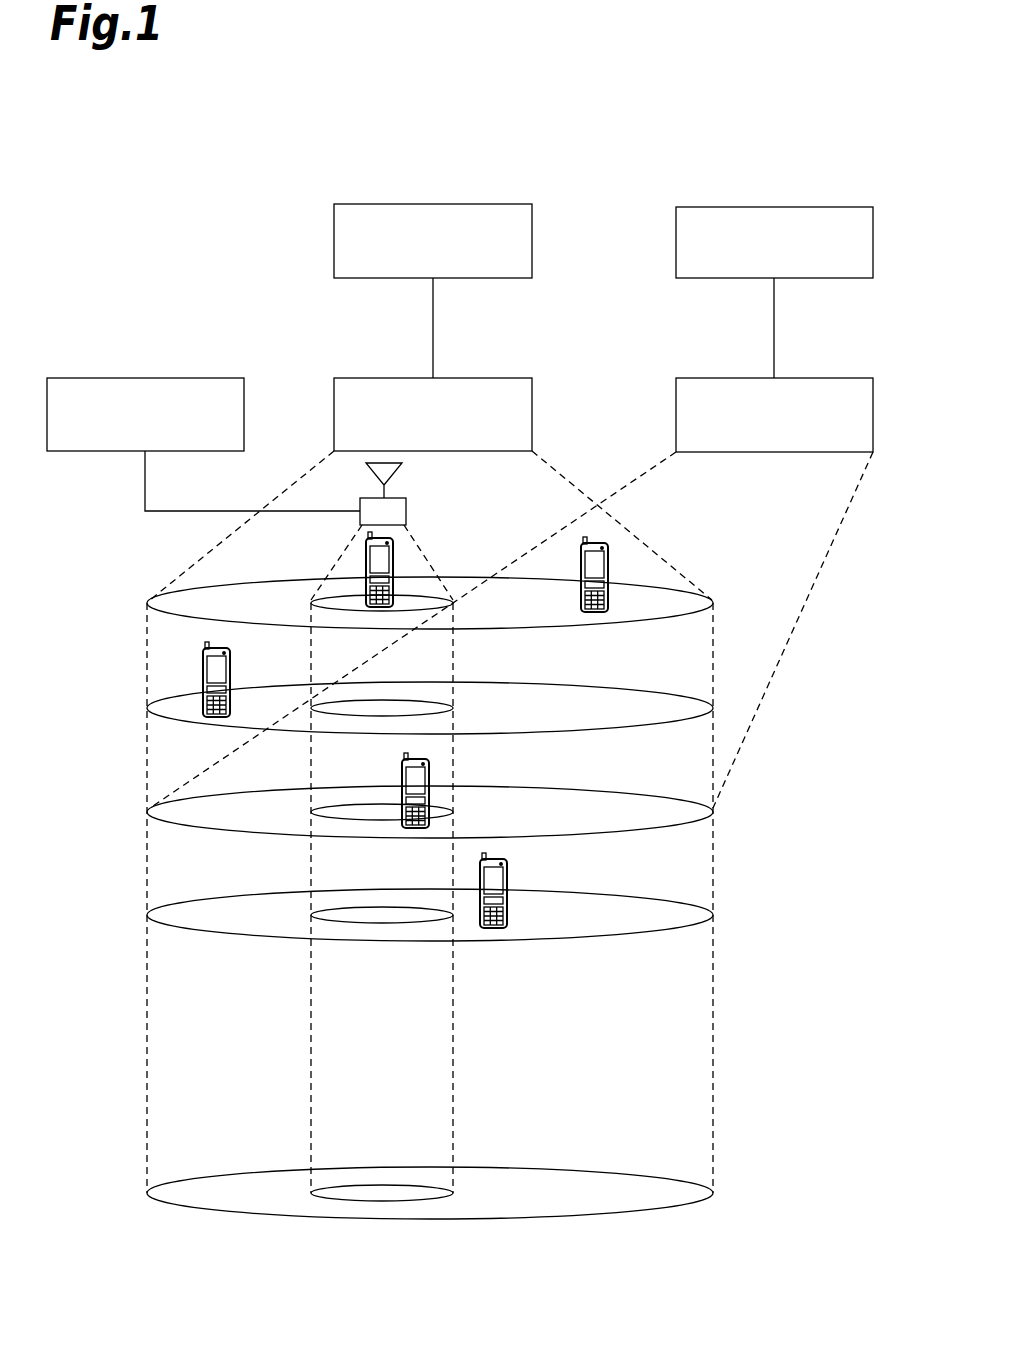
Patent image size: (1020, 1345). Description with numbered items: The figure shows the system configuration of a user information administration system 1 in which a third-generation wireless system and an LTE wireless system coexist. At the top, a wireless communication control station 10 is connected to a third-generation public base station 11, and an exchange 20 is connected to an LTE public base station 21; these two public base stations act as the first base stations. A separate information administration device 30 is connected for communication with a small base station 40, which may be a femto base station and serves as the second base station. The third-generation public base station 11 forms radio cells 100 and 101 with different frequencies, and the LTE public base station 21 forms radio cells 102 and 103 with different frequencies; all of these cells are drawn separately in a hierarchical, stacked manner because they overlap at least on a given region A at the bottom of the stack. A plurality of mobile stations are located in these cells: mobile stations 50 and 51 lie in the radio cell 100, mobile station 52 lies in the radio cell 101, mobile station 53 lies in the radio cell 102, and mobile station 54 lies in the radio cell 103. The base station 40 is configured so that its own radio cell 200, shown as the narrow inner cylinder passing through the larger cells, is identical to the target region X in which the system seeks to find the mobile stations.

The user information administration system 1 is at (120, 148).
The wireless communication control station 10 is at (502, 204).
The 3G public base station 11 is at (502, 378).
The exchange 20 is at (840, 207).
The LTE public base station 21 is at (840, 378).
The information administration device 30 is at (90, 378).
The base station 40 is at (406, 512).
The mobile station 50 is at (395, 560).
The mobile station 51 is at (610, 560).
The mobile station 52 is at (200, 670).
The mobile station 53 is at (433, 776).
The mobile station 54 is at (511, 881).
The radio cell 100 is at (158, 600).
The radio cell 101 is at (158, 706).
The radio cell 102 is at (158, 810).
The radio cell 103 is at (158, 913).
The radio cell 200 is at (312, 598).
The region A is at (158, 1190).
The target region X is at (384, 1186).